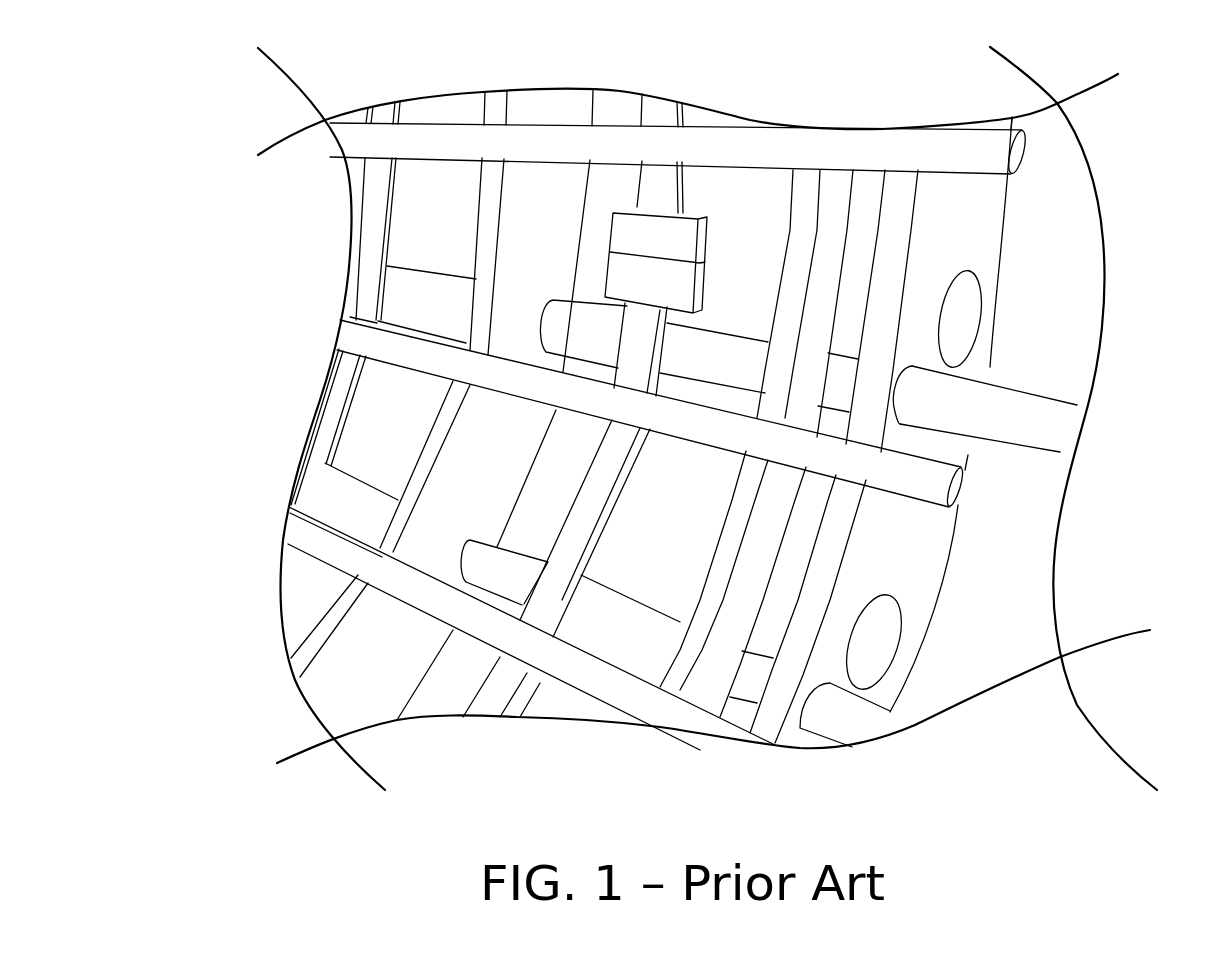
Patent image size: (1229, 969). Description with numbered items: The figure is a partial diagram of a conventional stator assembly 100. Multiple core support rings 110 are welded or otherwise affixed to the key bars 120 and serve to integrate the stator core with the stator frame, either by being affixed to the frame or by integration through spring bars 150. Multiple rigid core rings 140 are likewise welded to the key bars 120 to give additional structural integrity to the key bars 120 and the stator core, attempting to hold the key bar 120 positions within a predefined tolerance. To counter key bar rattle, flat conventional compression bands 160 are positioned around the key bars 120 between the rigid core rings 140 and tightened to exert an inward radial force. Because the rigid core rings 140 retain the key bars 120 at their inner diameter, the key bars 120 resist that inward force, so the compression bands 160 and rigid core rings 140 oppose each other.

The stator assembly 100 is at (157, 720).
The core support rings 110 is at (520, 268).
The key bars 120 is at (322, 540).
The rigid core rings 140 is at (825, 246).
The spring bars 150 is at (1020, 425).
The compression bands 160 is at (660, 198).